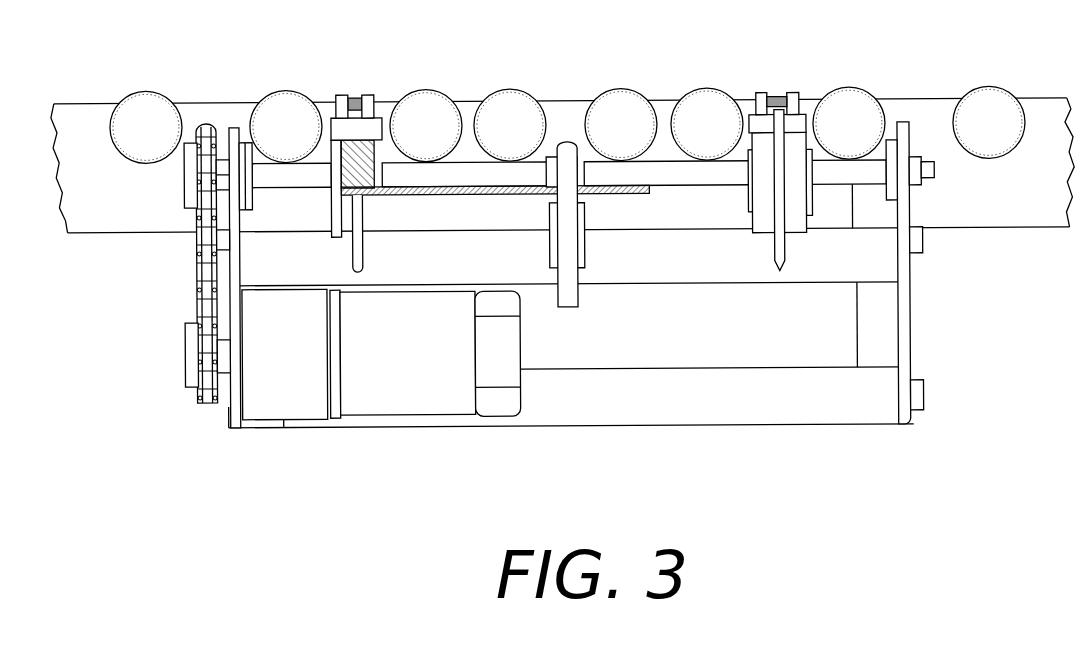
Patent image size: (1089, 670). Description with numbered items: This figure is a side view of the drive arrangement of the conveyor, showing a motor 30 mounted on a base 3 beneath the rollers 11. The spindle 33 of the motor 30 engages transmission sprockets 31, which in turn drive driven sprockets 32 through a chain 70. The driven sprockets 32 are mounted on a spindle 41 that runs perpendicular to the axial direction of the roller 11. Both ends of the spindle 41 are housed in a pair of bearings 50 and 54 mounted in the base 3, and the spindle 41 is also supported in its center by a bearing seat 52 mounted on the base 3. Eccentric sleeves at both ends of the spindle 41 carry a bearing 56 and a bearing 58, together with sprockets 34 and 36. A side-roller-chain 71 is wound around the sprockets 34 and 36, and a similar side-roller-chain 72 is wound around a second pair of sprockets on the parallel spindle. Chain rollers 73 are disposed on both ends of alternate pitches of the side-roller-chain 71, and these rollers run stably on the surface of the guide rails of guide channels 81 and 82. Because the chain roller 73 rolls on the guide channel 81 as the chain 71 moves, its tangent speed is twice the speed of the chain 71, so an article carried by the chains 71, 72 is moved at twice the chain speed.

The base 3 is at (903, 310).
The roller 11 is at (502, 88).
The motor 30 is at (288, 392).
The transmission sprockets 31 is at (197, 372).
The driven sprockets 32 is at (190, 195).
The spindle 33 is at (225, 357).
The sprockets 34 is at (360, 253).
The sprockets 36 is at (778, 188).
The spindle 41 is at (277, 177).
The bearing 50 is at (247, 153).
The bearing seat 52 is at (563, 143).
The bearing 54 is at (888, 140).
The bearing 56 is at (342, 213).
The bearing 58 is at (797, 162).
The chain 70 is at (207, 293).
The side-roller-chain 71 is at (353, 96).
The side-roller-chain 72 is at (777, 128).
The chain roller 73 is at (337, 95).
The guide channel 81 is at (372, 103).
The guide channel 82 is at (765, 128).